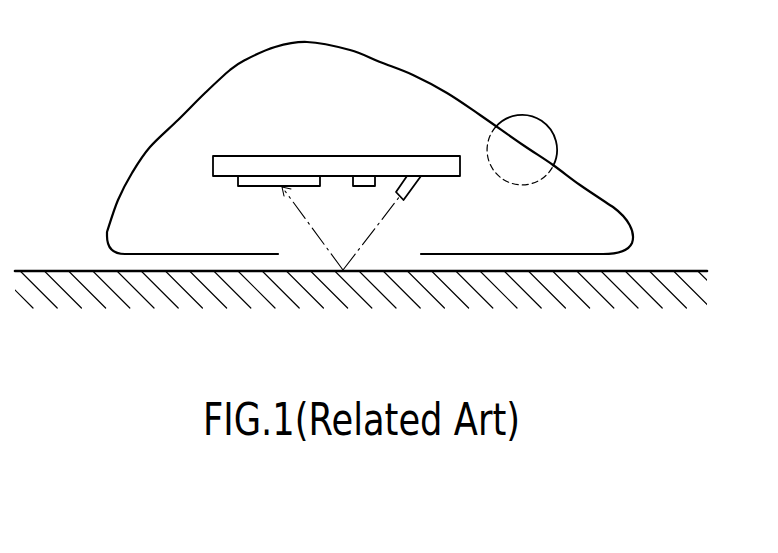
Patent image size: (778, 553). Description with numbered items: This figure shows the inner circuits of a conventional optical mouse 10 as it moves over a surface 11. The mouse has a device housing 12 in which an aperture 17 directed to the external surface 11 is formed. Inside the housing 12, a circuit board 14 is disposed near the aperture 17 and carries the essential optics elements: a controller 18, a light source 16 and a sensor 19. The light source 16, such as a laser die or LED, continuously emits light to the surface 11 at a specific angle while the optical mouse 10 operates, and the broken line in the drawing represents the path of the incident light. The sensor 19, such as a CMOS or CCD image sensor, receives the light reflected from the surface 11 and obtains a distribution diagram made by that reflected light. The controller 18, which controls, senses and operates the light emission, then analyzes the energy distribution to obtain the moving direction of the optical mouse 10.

The optical mouse 10 is at (71, 61).
The surface 11 is at (663, 256).
The device housing 12 is at (151, 148).
The circuit board 14 is at (393, 165).
The light source 16 is at (413, 187).
The aperture 17 is at (289, 271).
The controller 18 is at (365, 178).
The sensor 19 is at (270, 180).